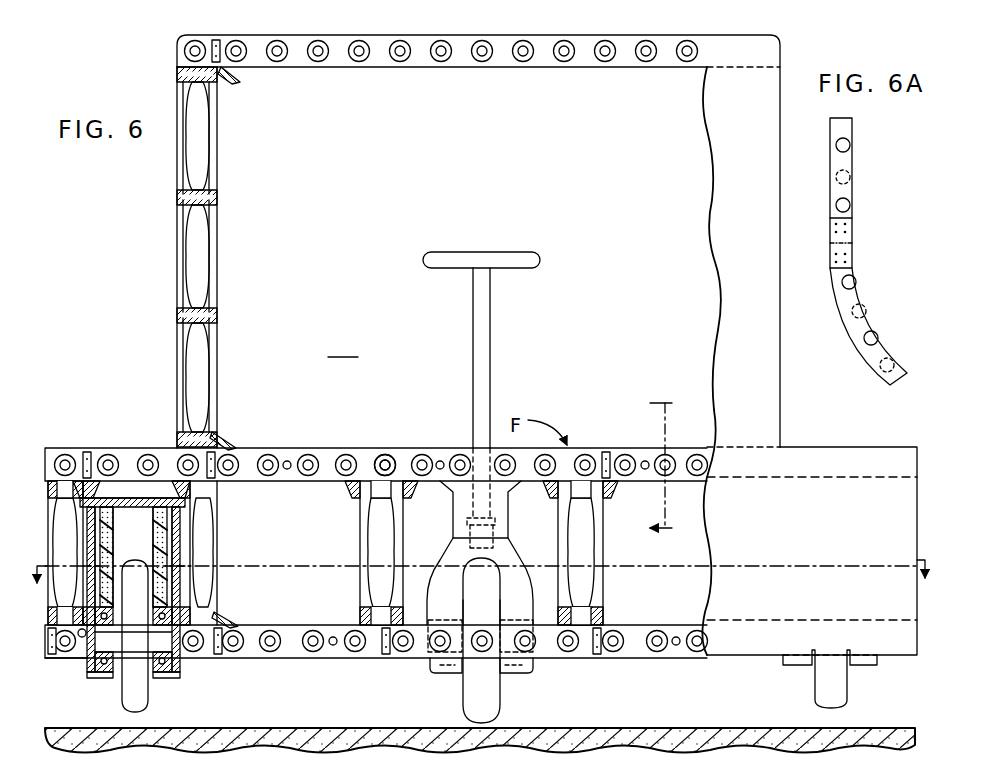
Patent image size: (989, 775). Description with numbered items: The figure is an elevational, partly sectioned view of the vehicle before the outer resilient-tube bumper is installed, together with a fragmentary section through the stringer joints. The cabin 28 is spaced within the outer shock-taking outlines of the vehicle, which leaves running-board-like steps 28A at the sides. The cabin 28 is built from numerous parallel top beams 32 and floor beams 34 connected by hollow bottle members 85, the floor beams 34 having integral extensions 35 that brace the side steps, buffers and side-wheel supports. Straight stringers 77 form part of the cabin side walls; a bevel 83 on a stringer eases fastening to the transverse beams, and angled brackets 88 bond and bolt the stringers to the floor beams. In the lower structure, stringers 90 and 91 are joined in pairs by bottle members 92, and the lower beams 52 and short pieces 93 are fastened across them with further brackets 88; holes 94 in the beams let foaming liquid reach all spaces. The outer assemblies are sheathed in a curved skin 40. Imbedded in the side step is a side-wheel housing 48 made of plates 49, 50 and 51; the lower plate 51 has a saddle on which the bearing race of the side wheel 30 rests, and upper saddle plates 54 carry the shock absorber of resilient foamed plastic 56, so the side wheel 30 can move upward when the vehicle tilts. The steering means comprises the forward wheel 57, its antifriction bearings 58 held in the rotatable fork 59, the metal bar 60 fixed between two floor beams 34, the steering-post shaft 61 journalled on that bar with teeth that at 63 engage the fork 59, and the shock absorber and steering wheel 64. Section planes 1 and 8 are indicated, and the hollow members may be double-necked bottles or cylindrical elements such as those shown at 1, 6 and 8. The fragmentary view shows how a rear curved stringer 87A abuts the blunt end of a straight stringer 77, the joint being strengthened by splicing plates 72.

In FIG. 6, the top beam 32 is at (345, 45).
In FIG. 6, the cabin 28 is at (343, 345).
In FIG. 6, the running-board-like step 28A is at (820, 447).
In FIG. 6, the angled bracket 88 is at (195, 40).
In FIG. 6, the bevel 83 is at (228, 78).
In FIG. 6, the straight stringer 77 is at (215, 93).
In FIG. 6A, the straight stringer 77 is at (850, 152).
In FIG. 6, the double-necked bottle 6 is at (193, 392).
In FIG. 6, the shock absorber / steering wheel 64 is at (423, 262).
In FIG. 6, the steering-post shaft 61 is at (473, 378).
In FIG. 6, the metal bar 60 is at (453, 498).
In FIG. 6, the cooperating teeth 63 is at (465, 550).
In FIG. 6, the rotatable fork 59 is at (452, 592).
In FIG. 6, the forward wheel 57 is at (466, 708).
In FIG. 6, the antifriction bearing 58 is at (505, 668).
In FIG. 6, the bottle member 85 is at (385, 455).
In FIG. 6, the hole 94 is at (440, 460).
In FIG. 6, the floor beam extension 35 is at (165, 452).
In FIG. 6, the floor beam 34 is at (312, 492).
In FIG. 6, the lower beam 52 is at (300, 655).
In FIG. 6, the stringer 90 is at (108, 442).
In FIG. 6, the straight stringer 91 is at (362, 500).
In FIG. 6, the bottle member 92 is at (212, 543).
In FIG. 6, the curved skin 40 is at (48, 522).
In FIG. 6, the side-wheel housing 48 is at (150, 500).
In FIG. 6, the upper plate 49 is at (133, 557).
In FIG. 6, the resilient foamed plastic 56 is at (153, 545).
In FIG. 6, the upper saddle plate 54 is at (142, 618).
In FIG. 6, the lower plate 51 is at (98, 678).
In FIG. 6, the housing plate 50 is at (212, 580).
In FIG. 6, the short piece 93 is at (80, 660).
In FIG. 6, the side wheel 30 is at (128, 700).
In FIG. 6, the cylindrical element 8 is at (648, 466).
In FIG. 6, the double-necked bottle member 1 is at (481, 588).
In FIG. 6A, the splicing plate 72 is at (830, 230).
In FIG. 6A, the rear curved stringer 87A is at (878, 356).